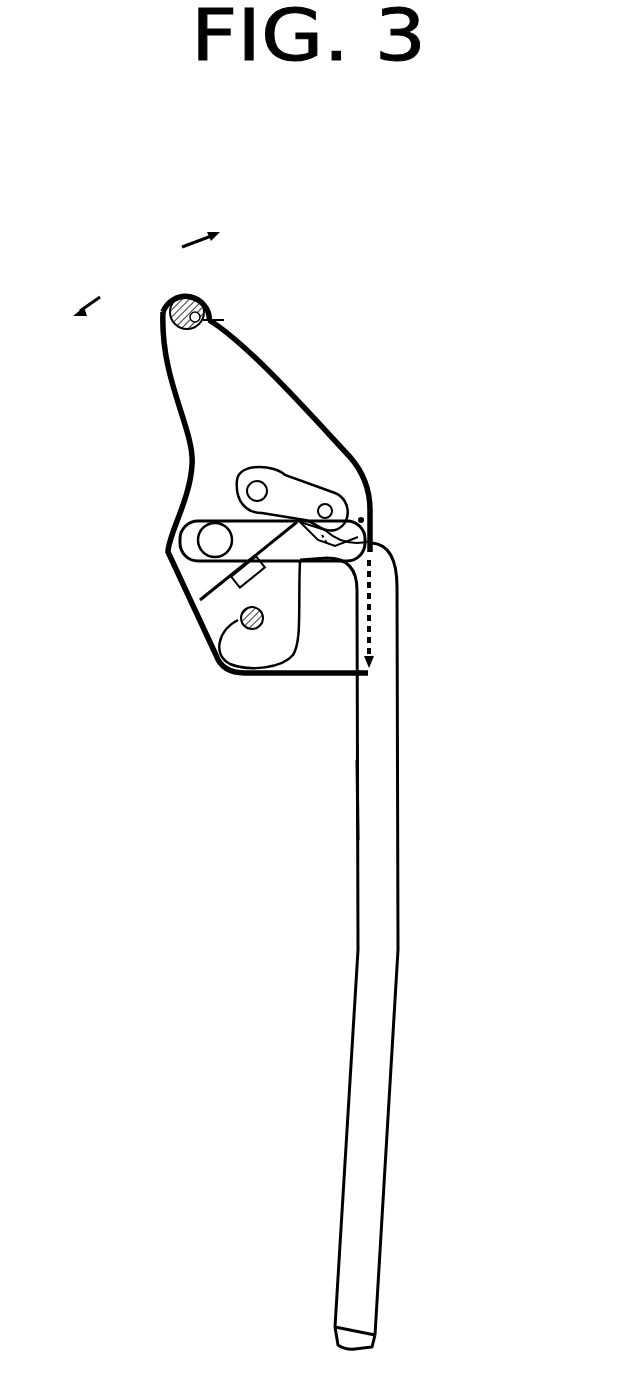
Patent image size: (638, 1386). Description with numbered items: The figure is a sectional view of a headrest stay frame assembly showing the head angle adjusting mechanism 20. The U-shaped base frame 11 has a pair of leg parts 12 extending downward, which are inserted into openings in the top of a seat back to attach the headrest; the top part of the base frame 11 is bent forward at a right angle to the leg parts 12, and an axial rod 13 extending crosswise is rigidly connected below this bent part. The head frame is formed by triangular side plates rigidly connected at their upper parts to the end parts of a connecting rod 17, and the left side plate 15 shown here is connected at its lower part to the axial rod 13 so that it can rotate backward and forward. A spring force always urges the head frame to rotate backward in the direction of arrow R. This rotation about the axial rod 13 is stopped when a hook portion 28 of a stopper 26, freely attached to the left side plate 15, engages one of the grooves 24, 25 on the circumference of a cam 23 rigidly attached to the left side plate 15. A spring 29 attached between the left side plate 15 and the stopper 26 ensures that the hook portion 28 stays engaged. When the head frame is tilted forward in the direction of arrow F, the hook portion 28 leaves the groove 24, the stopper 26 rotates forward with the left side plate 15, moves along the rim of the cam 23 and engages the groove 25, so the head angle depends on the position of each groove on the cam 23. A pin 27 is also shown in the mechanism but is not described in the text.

The base frame 11 is at (430, 740).
The leg parts 12 is at (368, 798).
The axial rod 13 is at (213, 648).
The left side plate 15 is at (237, 385).
The connecting rod 17 is at (227, 318).
The head angle adjusting mechanism 20 is at (142, 447).
The cam 23 is at (288, 628).
The groove 24 is at (370, 541).
The groove 25 is at (195, 520).
The stopper 26 is at (288, 490).
The pin 27 is at (332, 480).
The hook portion 28 is at (363, 518).
The spring 29 is at (248, 566).
The arrow R is at (194, 226).
The arrow F is at (86, 288).